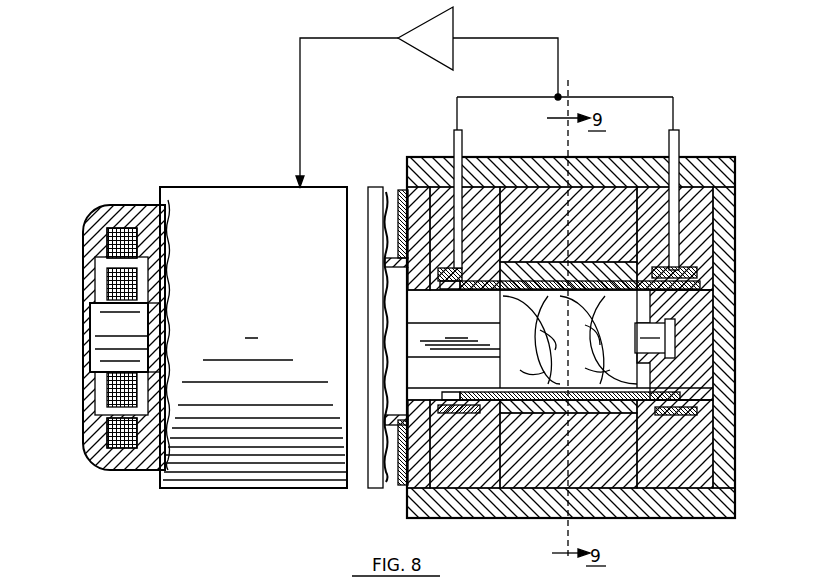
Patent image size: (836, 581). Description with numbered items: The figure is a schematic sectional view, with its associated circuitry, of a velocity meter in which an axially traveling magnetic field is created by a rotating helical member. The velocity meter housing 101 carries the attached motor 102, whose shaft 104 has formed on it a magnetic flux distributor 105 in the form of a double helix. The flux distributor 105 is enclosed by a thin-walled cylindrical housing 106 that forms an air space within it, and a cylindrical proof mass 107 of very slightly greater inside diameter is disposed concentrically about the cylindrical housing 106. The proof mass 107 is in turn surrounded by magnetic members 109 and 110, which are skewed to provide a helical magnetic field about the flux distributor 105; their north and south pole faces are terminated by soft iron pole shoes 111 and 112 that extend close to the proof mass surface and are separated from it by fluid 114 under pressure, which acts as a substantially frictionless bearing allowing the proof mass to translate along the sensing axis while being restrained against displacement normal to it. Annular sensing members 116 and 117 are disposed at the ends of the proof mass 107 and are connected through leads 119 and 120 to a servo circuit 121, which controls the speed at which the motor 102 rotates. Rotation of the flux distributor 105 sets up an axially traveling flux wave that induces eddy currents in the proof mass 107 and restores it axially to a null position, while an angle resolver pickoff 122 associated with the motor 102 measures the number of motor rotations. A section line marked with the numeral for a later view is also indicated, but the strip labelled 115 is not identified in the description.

The velocity meter housing 101 is at (683, 522).
The motor 102 is at (254, 462).
The shaft 104 is at (443, 333).
The magnetic flux distributor 105 is at (507, 352).
The thin-walled cylindrical housing 106 is at (452, 390).
The cylindrical proof mass 107 is at (493, 280).
The magnetic member 109 is at (608, 203).
The magnetic member 110 is at (513, 470).
The soft iron pole shoe 111 is at (583, 262).
The soft iron pole shoe 112 is at (632, 445).
The fluid 114 is at (697, 397).
The lower electrode strip 115 is at (548, 404).
The annular sensing member 116 is at (456, 284).
The annular sensing member 117 is at (683, 278).
The lead 119 is at (460, 147).
The lead 120 is at (680, 138).
The servo circuit 121 is at (437, 23).
The angle resolver pickoff 122 is at (118, 247).